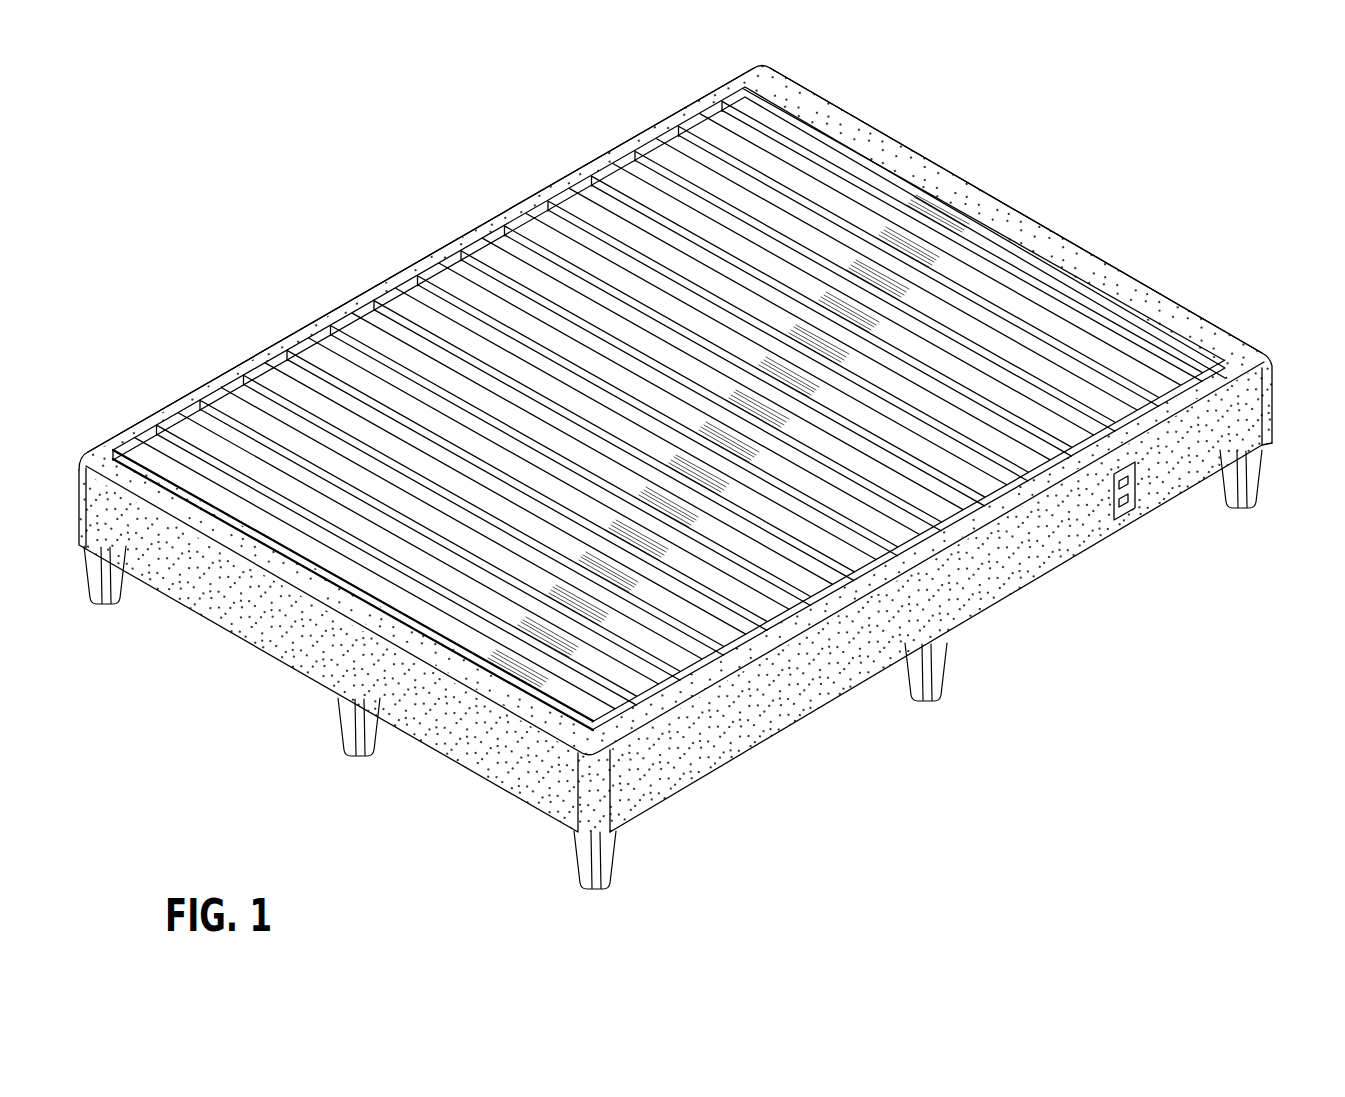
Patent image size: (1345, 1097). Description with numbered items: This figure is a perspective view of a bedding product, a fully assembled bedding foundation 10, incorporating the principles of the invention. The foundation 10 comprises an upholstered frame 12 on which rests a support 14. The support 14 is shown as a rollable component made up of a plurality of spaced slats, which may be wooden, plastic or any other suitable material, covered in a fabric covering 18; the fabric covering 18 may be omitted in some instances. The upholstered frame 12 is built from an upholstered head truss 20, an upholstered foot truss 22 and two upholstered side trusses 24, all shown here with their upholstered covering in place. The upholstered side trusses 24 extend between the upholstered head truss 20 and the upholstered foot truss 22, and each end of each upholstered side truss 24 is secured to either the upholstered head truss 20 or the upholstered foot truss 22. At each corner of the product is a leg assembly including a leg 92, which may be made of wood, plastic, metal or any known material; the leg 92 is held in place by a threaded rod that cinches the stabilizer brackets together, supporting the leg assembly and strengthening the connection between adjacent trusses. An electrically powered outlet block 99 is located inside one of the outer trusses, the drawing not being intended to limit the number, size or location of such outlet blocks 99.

The foundation 10 is at (1022, 133).
The upholstered frame 12 is at (1271, 398).
The support 14 is at (1114, 312).
The fabric covering 18 is at (534, 249).
The upholstered head truss 20 is at (272, 636).
The upholstered foot truss 22 is at (1040, 222).
The upholstered side truss 24 is at (368, 292).
The leg 92 is at (110, 605).
The electrically powered outlet block 99 is at (1131, 521).